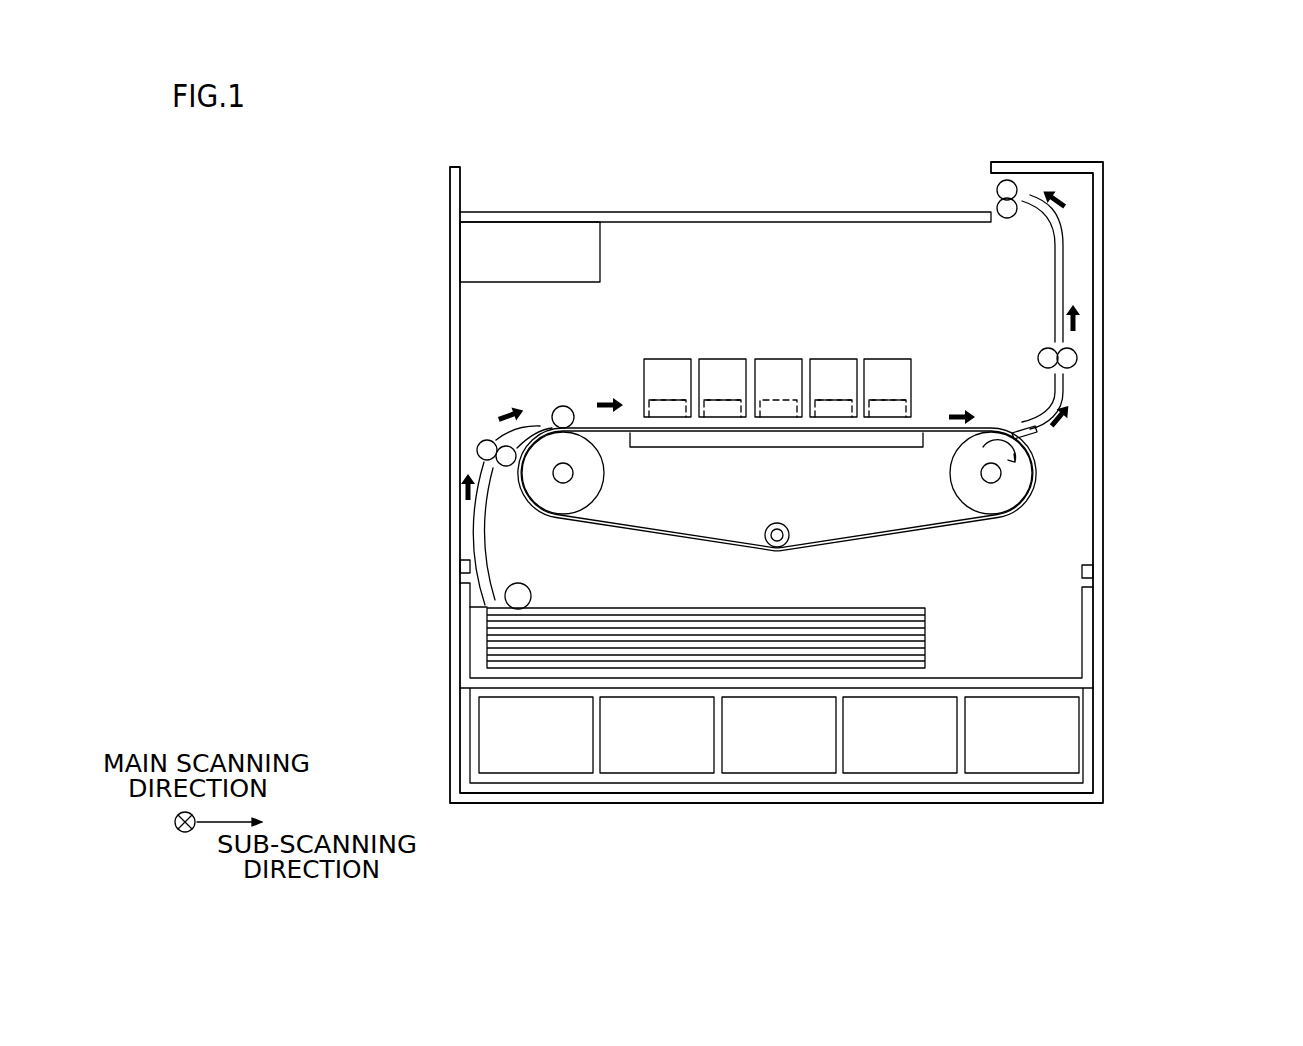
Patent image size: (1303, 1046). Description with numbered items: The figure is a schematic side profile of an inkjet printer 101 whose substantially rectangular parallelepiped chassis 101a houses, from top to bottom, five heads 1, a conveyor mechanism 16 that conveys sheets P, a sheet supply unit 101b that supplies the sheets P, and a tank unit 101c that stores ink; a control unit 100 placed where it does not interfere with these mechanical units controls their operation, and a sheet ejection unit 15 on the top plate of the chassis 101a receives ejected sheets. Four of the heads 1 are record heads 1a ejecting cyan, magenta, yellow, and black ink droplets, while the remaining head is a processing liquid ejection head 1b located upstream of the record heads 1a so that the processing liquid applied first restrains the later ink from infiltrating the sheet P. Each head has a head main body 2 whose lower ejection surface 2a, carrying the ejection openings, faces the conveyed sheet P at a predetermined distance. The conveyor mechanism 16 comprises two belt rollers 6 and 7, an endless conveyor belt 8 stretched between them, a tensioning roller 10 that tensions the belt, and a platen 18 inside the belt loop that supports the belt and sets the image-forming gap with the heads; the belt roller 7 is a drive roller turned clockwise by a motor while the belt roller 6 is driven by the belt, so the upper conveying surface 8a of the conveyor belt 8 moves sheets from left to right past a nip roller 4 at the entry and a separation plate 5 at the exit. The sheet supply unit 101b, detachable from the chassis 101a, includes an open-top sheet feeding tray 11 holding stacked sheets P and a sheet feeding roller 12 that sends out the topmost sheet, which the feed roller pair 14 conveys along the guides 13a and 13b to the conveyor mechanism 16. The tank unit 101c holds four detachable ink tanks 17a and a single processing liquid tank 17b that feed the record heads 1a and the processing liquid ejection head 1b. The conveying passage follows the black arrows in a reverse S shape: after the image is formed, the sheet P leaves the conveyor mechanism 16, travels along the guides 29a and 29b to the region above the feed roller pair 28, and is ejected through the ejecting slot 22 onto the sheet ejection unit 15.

The inkjet printer 101 is at (1185, 136).
The chassis 101a is at (1103, 456).
The sheet supply unit 101b is at (359, 578).
The tank unit 101c is at (1105, 732).
The control unit 100 is at (463, 253).
The sheet ejection unit 15 is at (585, 212).
The heads 1 is at (777, 336).
The record heads 1a is at (780, 359).
The processing liquid ejection head 1b is at (668, 359).
The head main body 2 is at (903, 396).
The ejection surface 2a is at (678, 417).
The conveyor mechanism 16 is at (777, 448).
The conveyor belt 8 is at (728, 538).
The belt conveying surface 8a is at (940, 430).
The belt roller 6 is at (564, 500).
The belt roller 7 is at (991, 500).
The tensioning roller 10 is at (792, 528).
The platen 18 is at (777, 438).
The nip roller 4 is at (563, 405).
The separation plate 5 is at (1018, 427).
The guide 13a is at (473, 532).
The guide 13b is at (497, 438).
The feed roller pair 14 is at (478, 448).
The sheet feeding roller 12 is at (505, 596).
The sheet feeding tray 11 is at (468, 636).
The sheet P is at (593, 607).
The guide 29a is at (1063, 392).
The guide 29b is at (1063, 257).
The feed roller pair 28 is at (1010, 200).
The ejecting slot 22 is at (983, 186).
The ink tanks 17a is at (773, 760).
The processing liquid tank 17b is at (560, 765).